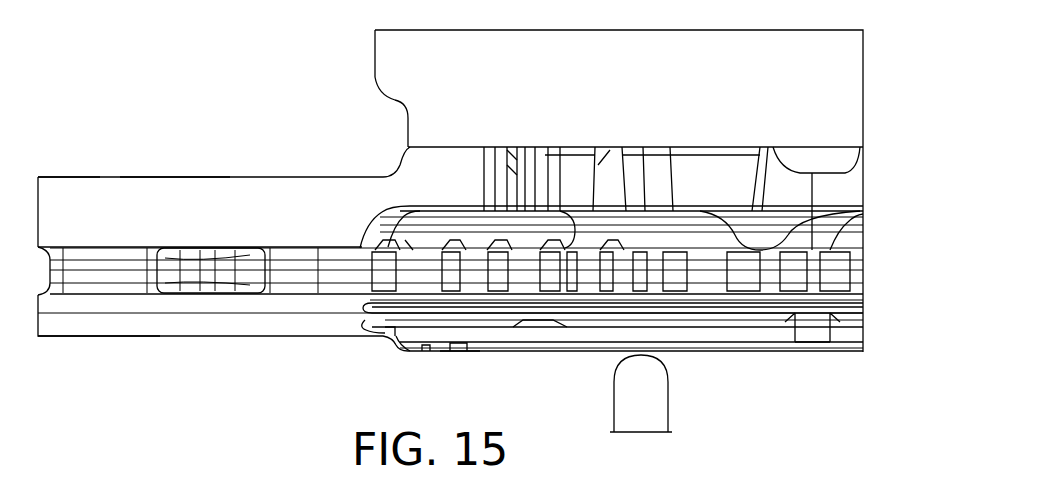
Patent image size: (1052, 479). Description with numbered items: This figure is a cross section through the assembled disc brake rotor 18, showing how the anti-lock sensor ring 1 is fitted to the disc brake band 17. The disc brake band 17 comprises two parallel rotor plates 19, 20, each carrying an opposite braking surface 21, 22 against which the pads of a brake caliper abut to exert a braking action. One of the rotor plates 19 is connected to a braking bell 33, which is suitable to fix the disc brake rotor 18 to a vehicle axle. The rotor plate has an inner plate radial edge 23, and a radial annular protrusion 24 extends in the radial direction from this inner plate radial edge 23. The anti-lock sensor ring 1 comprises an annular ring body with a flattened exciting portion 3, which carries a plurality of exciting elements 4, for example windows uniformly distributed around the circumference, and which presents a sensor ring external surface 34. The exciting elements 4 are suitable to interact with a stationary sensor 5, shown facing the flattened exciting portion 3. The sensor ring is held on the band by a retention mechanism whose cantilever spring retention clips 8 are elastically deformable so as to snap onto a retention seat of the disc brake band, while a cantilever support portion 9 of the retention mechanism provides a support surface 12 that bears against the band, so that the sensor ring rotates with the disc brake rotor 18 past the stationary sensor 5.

The anti-lock sensor ring 1 is at (407, 353).
The flattened exciting portion 3 is at (462, 353).
The exciting elements 4 is at (425, 352).
The stationary sensor 5 is at (650, 405).
The cantilever spring retention clips 8 is at (805, 322).
The cantilever support portion 9 is at (378, 340).
The support surface 12 is at (365, 357).
The disc brake band 17 is at (228, 200).
The disc brake rotor 18 is at (333, 133).
The rotor plate 19 is at (150, 193).
The rotor plate 20 is at (210, 322).
The braking surface 21 is at (178, 177).
The braking surface 22 is at (105, 340).
The inner plate radial edge 23 is at (372, 330).
The radial annular protrusion 24 is at (370, 325).
The braking bell 33 is at (773, 80).
The sensor ring external surface 34 is at (428, 353).